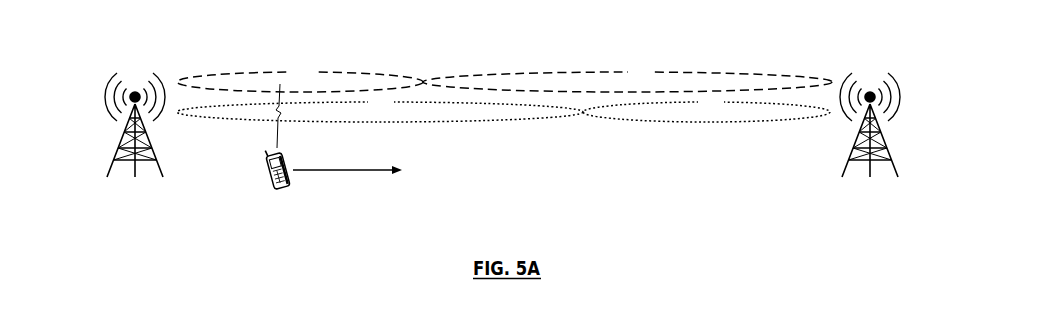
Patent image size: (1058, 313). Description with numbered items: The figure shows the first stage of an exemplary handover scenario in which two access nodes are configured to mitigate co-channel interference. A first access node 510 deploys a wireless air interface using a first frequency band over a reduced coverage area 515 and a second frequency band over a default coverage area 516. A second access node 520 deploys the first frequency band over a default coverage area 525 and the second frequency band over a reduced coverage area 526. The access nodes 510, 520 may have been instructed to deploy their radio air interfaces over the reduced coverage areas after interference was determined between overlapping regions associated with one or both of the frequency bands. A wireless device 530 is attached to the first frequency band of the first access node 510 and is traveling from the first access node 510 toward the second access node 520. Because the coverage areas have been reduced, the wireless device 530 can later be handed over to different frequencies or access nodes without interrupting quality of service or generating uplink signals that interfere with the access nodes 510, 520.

The first access node 510 is at (116, 158).
The reduced coverage area 515 is at (235, 73).
The default coverage area 516 is at (234, 121).
The second access node 520 is at (889, 158).
The default coverage area 525 is at (775, 73).
The reduced coverage area 526 is at (780, 122).
The wireless device 530 is at (269, 188).